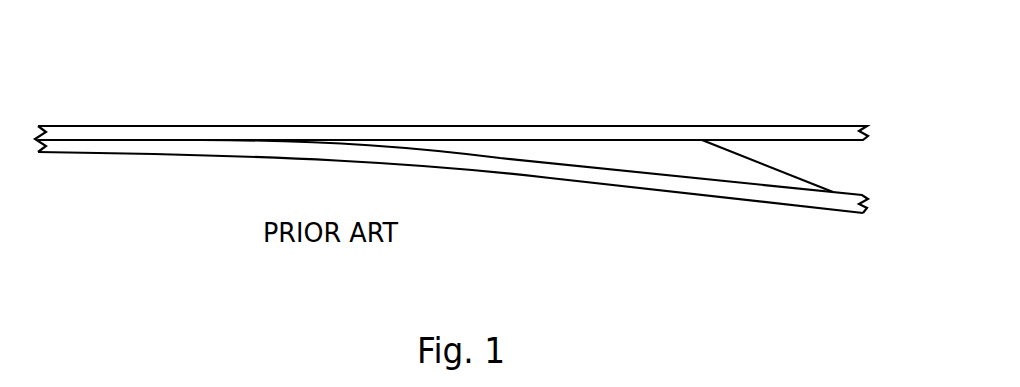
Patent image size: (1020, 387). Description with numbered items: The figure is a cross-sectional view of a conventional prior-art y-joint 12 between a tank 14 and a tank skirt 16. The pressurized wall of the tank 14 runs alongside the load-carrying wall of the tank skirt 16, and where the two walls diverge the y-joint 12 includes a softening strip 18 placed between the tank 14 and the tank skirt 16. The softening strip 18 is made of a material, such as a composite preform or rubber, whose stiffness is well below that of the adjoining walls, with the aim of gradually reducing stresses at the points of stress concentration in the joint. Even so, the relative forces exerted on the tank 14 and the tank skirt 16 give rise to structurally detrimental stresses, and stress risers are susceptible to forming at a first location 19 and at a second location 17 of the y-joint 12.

The y-joint 12 is at (451, 181).
The tank 14 is at (453, 246).
The tank skirt 16 is at (228, 126).
The second location 17 is at (622, 132).
The softening strip 18 is at (453, 246).
The first location 19 is at (720, 205).